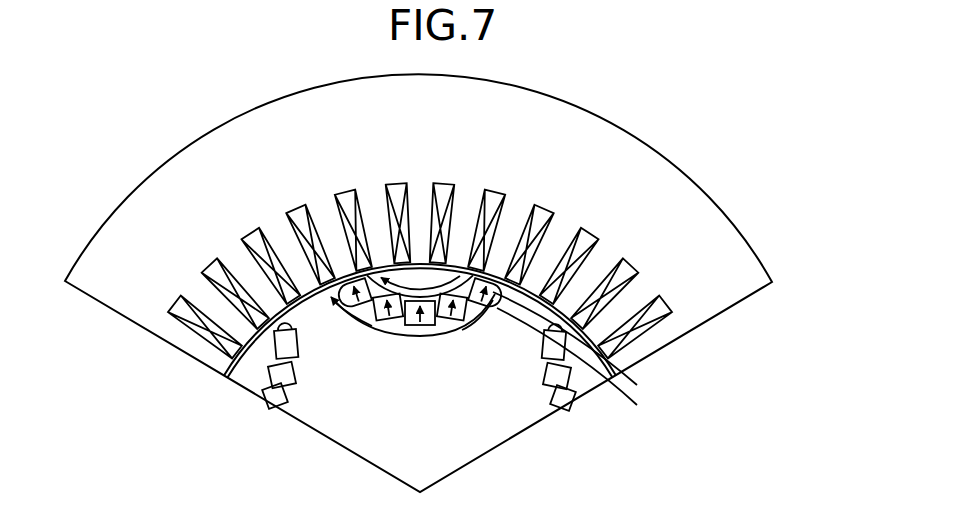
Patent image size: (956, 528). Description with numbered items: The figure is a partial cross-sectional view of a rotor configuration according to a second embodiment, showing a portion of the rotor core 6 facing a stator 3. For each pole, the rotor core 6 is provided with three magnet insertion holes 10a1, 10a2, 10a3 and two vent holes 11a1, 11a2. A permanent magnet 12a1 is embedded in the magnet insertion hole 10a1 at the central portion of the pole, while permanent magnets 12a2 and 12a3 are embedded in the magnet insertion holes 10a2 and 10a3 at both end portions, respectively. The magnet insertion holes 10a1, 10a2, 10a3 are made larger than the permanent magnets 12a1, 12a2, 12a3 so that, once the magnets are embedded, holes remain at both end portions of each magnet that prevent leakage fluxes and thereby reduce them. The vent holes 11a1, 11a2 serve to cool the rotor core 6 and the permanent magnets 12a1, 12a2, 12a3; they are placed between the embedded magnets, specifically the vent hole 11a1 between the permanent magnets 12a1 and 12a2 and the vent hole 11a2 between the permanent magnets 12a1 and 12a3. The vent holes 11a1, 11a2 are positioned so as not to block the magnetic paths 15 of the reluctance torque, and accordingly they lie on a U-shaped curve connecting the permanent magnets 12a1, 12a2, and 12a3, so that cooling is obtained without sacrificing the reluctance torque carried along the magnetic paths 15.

The stator 3 is at (592, 143).
The rotor core 6 is at (468, 387).
The magnet insertion hole 10a1 is at (420, 338).
The magnet insertion hole 10a2 is at (486, 320).
The magnet insertion hole 10a3 is at (352, 319).
The vent hole 11a1 is at (451, 322).
The vent hole 11a2 is at (389, 321).
The permanent magnet 12a1 is at (411, 326).
The permanent magnet 12a2 is at (479, 306).
The permanent magnet 12a3 is at (358, 307).
The magnetic paths 15 is at (643, 380).